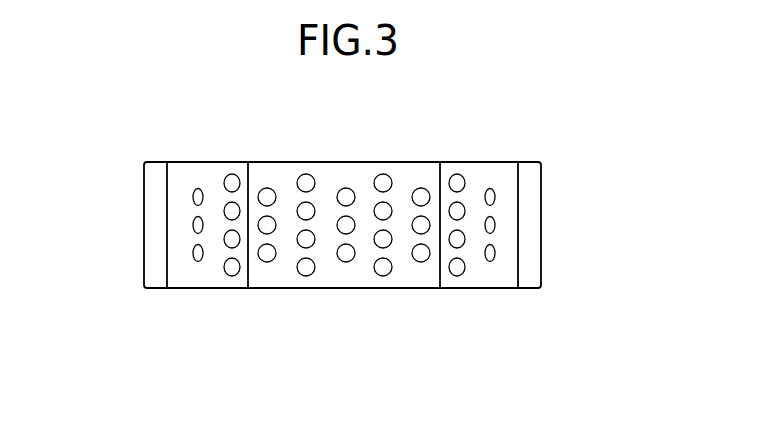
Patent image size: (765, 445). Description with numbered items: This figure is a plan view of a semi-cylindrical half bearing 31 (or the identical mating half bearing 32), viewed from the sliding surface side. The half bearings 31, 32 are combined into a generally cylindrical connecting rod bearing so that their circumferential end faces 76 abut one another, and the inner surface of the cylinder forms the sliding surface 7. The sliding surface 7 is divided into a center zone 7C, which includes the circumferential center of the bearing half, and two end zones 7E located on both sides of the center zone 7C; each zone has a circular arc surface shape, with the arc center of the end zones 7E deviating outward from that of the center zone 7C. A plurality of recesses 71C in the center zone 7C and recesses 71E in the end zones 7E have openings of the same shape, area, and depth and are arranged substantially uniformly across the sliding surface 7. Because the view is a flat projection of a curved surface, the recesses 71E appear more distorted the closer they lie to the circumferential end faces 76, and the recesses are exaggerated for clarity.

The sliding surface 7 is at (206, 178).
The end zone 7E is at (331, 219).
The center zone 7C is at (343, 219).
The recess 71E is at (195, 193).
The recess 71C is at (305, 175).
The circumferential end face 76 is at (152, 250).
The half bearing 31 is at (381, 193).
The half bearing 32 is at (522, 161).